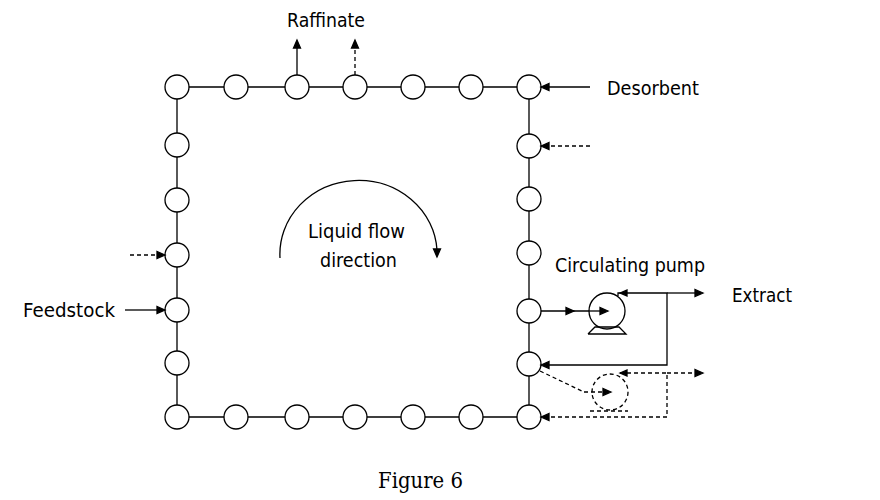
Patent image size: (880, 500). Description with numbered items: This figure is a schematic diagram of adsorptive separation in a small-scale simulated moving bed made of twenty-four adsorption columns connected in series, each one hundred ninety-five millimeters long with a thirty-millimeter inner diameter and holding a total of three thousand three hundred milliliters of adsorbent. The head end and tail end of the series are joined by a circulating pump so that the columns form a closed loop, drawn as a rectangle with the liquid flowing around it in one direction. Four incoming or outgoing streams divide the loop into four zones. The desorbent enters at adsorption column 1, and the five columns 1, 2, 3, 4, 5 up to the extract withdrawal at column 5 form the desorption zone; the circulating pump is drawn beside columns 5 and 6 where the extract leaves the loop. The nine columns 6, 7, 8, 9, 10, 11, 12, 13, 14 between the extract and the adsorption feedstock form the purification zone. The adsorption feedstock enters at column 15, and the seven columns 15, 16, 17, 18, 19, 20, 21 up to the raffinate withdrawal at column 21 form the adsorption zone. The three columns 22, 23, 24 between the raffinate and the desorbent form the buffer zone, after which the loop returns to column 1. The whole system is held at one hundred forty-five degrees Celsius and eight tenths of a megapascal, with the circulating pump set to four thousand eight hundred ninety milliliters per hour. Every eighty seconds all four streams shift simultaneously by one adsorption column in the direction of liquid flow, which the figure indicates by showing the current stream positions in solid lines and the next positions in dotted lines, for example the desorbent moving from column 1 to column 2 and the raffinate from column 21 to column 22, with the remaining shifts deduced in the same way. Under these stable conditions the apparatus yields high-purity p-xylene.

The adsorption column 1 is at (529, 87).
The adsorption column 2 is at (529, 146).
The adsorption column 3 is at (529, 199).
The adsorption column 4 is at (529, 253).
The adsorption column 5 is at (529, 311).
The adsorption column 6 is at (529, 364).
The adsorption column 7 is at (529, 417).
The adsorption column 8 is at (471, 417).
The adsorption column 9 is at (413, 417).
The adsorption column 10 is at (355, 417).
The adsorption column 11 is at (297, 417).
The adsorption column 12 is at (236, 417).
The adsorption column 13 is at (177, 417).
The adsorption column 14 is at (177, 363).
The adsorption column 15 is at (177, 310).
The adsorption column 16 is at (177, 255).
The adsorption column 17 is at (177, 200).
The adsorption column 18 is at (177, 145).
The adsorption column 19 is at (177, 87).
The adsorption column 20 is at (236, 87).
The adsorption column 21 is at (297, 87).
The adsorption column 22 is at (355, 87).
The adsorption column 23 is at (413, 87).
The adsorption column 24 is at (471, 87).